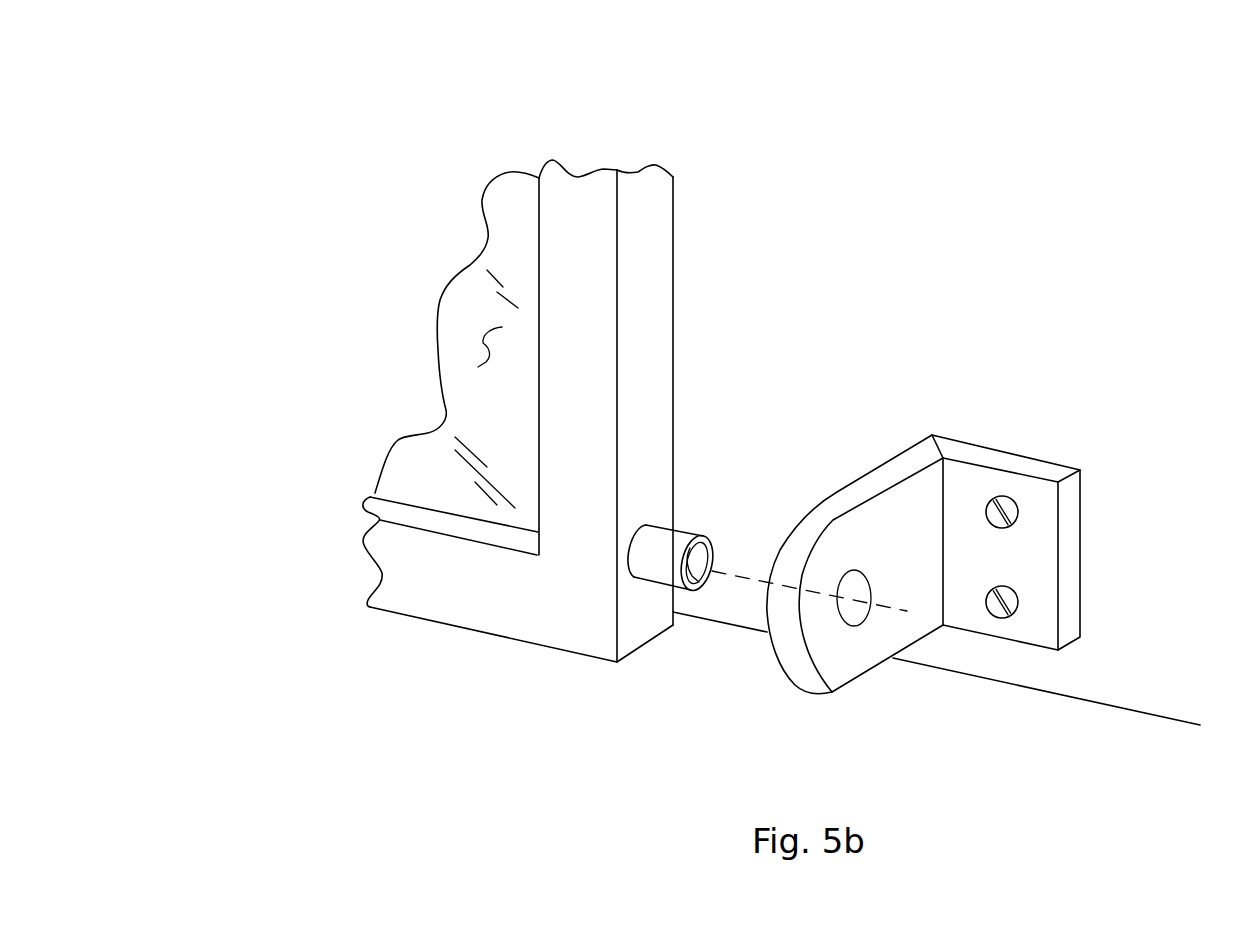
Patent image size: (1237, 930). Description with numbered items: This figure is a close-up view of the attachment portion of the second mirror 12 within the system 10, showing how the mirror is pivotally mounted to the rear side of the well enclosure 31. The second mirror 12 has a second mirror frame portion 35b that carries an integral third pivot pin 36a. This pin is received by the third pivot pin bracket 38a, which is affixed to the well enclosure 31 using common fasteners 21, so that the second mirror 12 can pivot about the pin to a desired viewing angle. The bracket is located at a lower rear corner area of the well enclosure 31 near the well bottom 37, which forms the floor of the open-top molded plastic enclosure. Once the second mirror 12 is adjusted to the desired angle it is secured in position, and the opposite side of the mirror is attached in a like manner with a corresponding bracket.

The system 10 is at (296, 134).
The second mirror 12 is at (483, 343).
The second mirror frame portion 35b is at (653, 248).
The third pivot pin 36a is at (668, 540).
The well enclosure 31 is at (920, 532).
The third pivot pin bracket 38a is at (778, 657).
The common fasteners 21 is at (1017, 593).
The well bottom 37 is at (1062, 745).